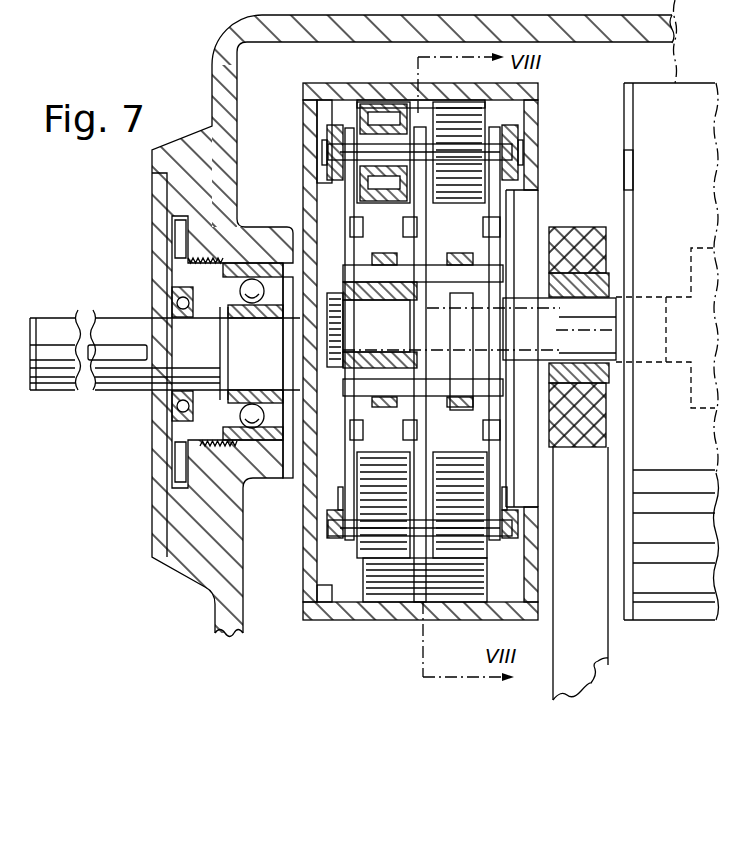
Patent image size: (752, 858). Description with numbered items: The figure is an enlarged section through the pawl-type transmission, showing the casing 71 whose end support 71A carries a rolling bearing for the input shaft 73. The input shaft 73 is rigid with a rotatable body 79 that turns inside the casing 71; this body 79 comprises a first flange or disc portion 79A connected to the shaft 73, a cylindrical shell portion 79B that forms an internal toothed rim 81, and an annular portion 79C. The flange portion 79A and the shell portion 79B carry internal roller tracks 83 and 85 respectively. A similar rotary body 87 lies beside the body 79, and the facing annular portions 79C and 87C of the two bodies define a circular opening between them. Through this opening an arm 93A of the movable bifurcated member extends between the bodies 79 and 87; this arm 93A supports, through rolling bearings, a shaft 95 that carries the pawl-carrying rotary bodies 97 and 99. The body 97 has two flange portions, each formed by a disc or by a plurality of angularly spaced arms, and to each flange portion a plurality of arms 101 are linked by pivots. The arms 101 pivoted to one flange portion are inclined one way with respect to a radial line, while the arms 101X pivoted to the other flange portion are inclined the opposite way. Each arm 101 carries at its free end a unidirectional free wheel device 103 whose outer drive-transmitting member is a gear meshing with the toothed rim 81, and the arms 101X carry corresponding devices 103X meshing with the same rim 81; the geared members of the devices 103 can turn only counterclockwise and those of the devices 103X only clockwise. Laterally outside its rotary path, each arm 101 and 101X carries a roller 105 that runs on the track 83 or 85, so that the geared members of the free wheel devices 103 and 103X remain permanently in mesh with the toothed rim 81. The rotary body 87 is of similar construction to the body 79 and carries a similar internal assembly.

The casing 71 is at (213, 72).
The end support 71A is at (268, 456).
The input shaft 73 is at (107, 325).
The rotatable body 79 is at (333, 634).
The flange portion 79A is at (302, 560).
The cylindrical shell portion 79B is at (388, 613).
The annular portion 79C is at (539, 537).
The internal toothed rim 81 is at (415, 98).
The internal roller track 83 is at (320, 197).
The internal roller track 85 is at (523, 188).
The rotary body 87 is at (614, 101).
The annular portion 87C is at (624, 167).
The arm 93A is at (597, 655).
The shaft 95 is at (596, 350).
The rotary body 97 is at (460, 393).
The rotary body 99 is at (681, 255).
The arm 101 is at (489, 212).
The arm 101X is at (357, 453).
The unidirectional free wheel device 103 is at (476, 477).
The unidirectional free wheel device 103X is at (345, 110).
The roller 105 is at (327, 128).